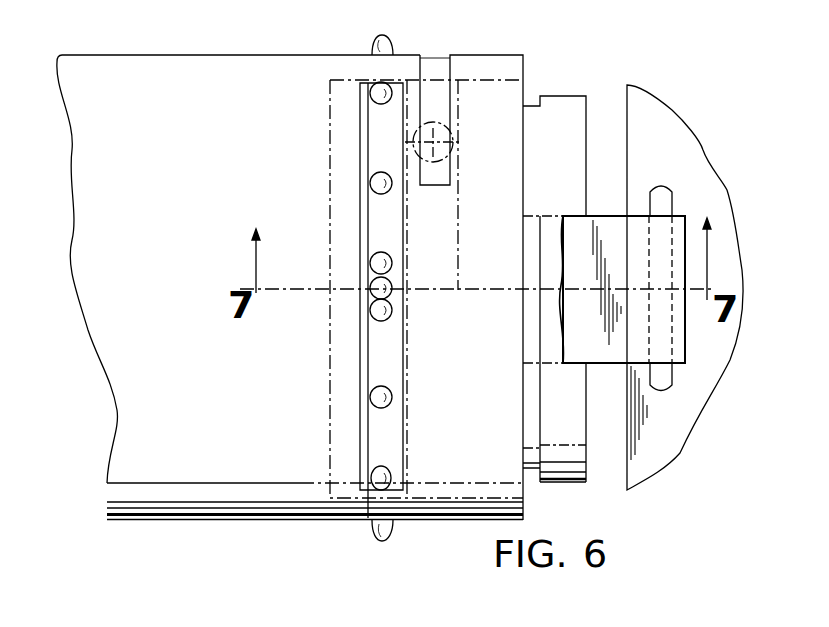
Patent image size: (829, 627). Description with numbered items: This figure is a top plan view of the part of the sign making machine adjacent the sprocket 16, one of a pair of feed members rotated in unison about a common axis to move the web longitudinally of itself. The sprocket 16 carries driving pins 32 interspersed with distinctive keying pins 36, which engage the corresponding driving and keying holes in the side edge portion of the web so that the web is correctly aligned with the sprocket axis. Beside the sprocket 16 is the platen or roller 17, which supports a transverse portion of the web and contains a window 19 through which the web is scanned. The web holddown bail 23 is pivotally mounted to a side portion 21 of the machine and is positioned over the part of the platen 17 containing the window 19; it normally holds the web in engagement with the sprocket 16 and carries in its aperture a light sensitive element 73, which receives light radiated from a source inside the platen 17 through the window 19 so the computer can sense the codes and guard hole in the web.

The sprocket 16 is at (416, 520).
The platen 17 is at (264, 491).
The window 19 is at (447, 80).
The side portion 21 is at (663, 133).
The web holddown bail 23 is at (602, 345).
The driving pins 32 is at (391, 394).
The keying pins 36 is at (393, 261).
The light sensitive element 73 is at (452, 121).